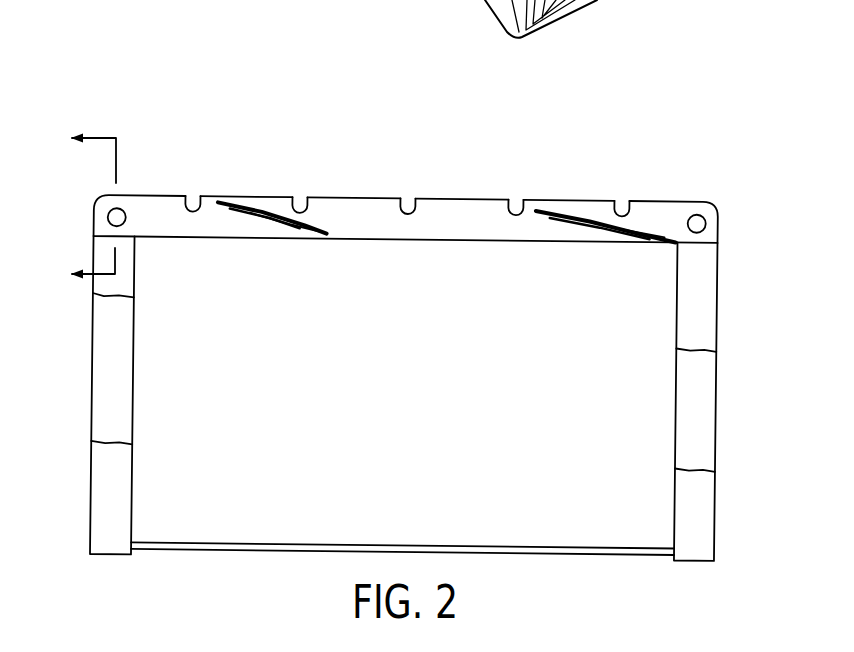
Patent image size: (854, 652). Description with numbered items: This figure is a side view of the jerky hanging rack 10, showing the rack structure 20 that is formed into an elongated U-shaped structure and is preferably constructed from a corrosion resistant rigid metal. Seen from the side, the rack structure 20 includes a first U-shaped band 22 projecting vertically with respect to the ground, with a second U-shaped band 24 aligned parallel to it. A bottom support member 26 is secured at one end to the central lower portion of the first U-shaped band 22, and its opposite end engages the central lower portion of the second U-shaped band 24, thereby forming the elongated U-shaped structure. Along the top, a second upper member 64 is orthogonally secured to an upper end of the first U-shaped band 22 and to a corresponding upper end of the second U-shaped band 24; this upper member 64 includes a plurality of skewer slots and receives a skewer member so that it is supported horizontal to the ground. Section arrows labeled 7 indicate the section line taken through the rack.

The jerky hanging rack 10 is at (436, 281).
The rack structure 20 is at (245, 192).
The first U-shaped band 22 is at (703, 298).
The second U-shaped band 24 is at (118, 347).
The bottom support member 26 is at (243, 541).
The second upper member 64 is at (452, 208).
The section line 7- 7 is at (83, 207).